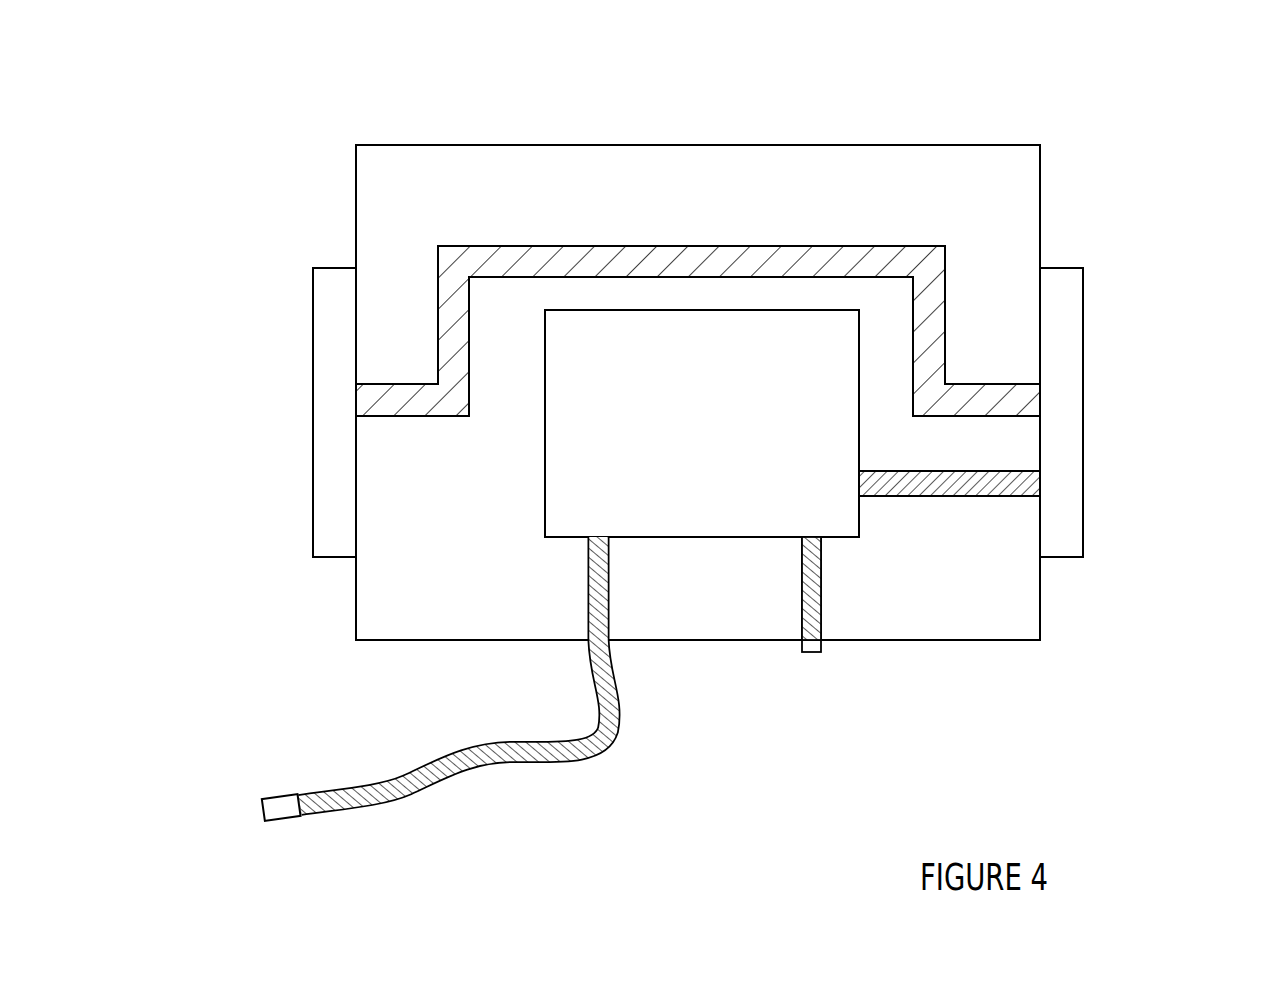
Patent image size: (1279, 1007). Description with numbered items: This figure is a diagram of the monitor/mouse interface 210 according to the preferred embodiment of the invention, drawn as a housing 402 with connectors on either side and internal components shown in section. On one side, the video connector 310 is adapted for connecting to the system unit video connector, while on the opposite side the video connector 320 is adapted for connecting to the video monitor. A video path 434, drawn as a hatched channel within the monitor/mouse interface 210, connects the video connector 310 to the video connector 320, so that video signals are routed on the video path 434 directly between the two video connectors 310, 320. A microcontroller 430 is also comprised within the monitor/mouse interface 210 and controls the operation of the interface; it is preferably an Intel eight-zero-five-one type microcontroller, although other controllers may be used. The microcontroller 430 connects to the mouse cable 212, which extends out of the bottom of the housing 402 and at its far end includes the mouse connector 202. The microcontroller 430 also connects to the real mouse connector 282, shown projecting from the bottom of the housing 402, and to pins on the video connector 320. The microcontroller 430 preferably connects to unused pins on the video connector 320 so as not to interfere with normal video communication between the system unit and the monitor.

The monitor/mouse interface 210 is at (220, 138).
The housing 402 is at (973, 145).
The video path 434 is at (478, 245).
The microcontroller 430 is at (545, 470).
The video connector 310 is at (287, 403).
The video connector 320 is at (1103, 400).
The real mouse connector 282 is at (821, 652).
The mouse cable 212 is at (455, 772).
The mouse connector 202 is at (277, 797).